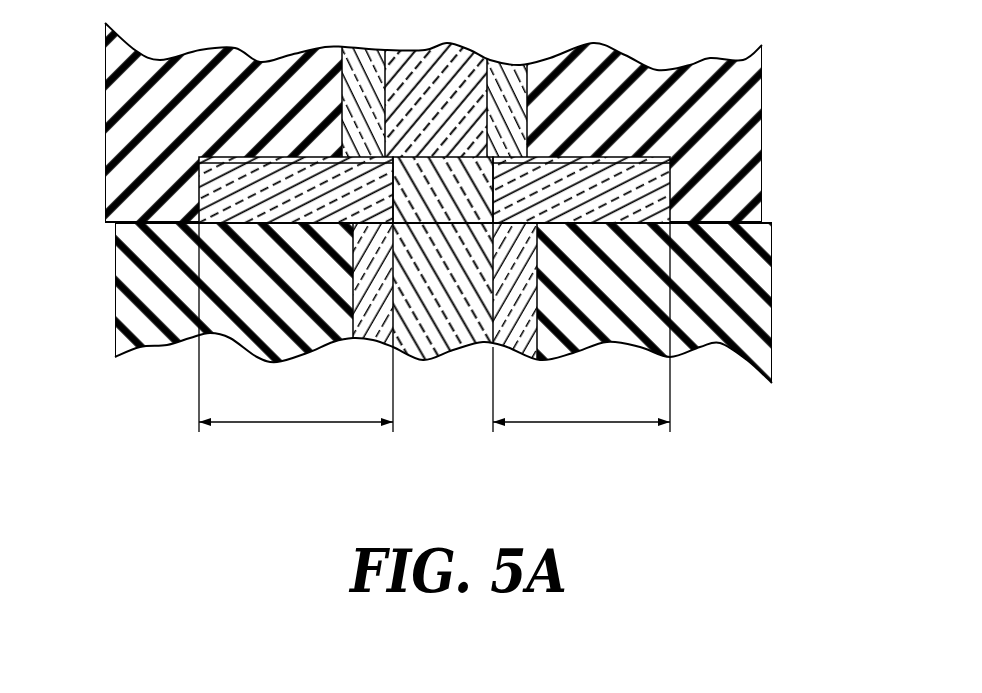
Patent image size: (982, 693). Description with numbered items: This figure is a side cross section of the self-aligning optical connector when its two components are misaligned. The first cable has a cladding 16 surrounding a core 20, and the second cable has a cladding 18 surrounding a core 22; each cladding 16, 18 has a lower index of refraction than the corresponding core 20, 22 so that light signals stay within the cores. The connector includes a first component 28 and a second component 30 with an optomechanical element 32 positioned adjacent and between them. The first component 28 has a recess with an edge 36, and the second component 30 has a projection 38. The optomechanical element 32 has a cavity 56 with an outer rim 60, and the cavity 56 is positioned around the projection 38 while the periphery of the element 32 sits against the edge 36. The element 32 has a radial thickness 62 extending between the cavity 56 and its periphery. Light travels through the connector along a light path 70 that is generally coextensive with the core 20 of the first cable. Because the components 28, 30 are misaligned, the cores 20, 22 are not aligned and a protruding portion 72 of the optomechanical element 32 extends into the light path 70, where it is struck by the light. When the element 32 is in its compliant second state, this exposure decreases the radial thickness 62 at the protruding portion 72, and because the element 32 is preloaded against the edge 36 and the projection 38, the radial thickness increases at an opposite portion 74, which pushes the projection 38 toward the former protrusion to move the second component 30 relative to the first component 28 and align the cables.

The cladding 16 is at (331, 55).
The cladding 18 is at (303, 358).
The core 20 is at (513, 67).
The core 22 is at (376, 348).
The first component 28 is at (105, 118).
The second component 30 is at (115, 263).
The optomechanical element 32 is at (199, 184).
The edge 36 is at (668, 145).
The projection 38 is at (462, 200).
The cavity 56 is at (352, 254).
The outer rim 60 is at (536, 255).
The radial thickness 62 is at (300, 424).
The light path 70 is at (422, 55).
The protruding portion 72 is at (343, 86).
The opposite portion 74 is at (277, 157).